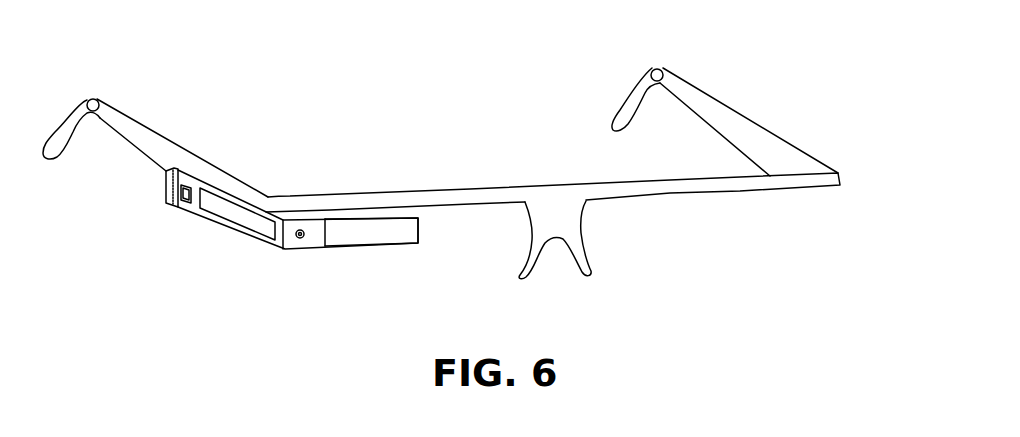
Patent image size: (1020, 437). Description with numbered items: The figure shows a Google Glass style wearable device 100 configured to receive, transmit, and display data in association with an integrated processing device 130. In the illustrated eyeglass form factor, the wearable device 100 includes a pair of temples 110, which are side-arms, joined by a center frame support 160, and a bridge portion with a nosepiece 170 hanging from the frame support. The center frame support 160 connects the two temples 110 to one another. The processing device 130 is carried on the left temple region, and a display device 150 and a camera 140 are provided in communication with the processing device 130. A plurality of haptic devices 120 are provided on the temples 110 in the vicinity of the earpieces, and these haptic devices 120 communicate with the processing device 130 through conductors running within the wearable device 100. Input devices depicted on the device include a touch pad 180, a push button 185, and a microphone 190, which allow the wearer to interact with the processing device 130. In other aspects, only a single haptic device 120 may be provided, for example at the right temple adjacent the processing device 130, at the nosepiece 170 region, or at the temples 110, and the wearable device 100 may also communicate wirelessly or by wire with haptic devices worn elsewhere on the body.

The wearable device 100 is at (808, 127).
The temples 110 is at (147, 143).
The haptic devices 120 is at (100, 103).
The processing device 130 is at (212, 218).
The camera 140 is at (301, 239).
The display device 150 is at (386, 245).
The center frame support 160 is at (466, 191).
The nosepiece 170 is at (584, 240).
The touch pad 180 is at (238, 216).
The push button 185 is at (184, 187).
The microphone 190 is at (166, 188).